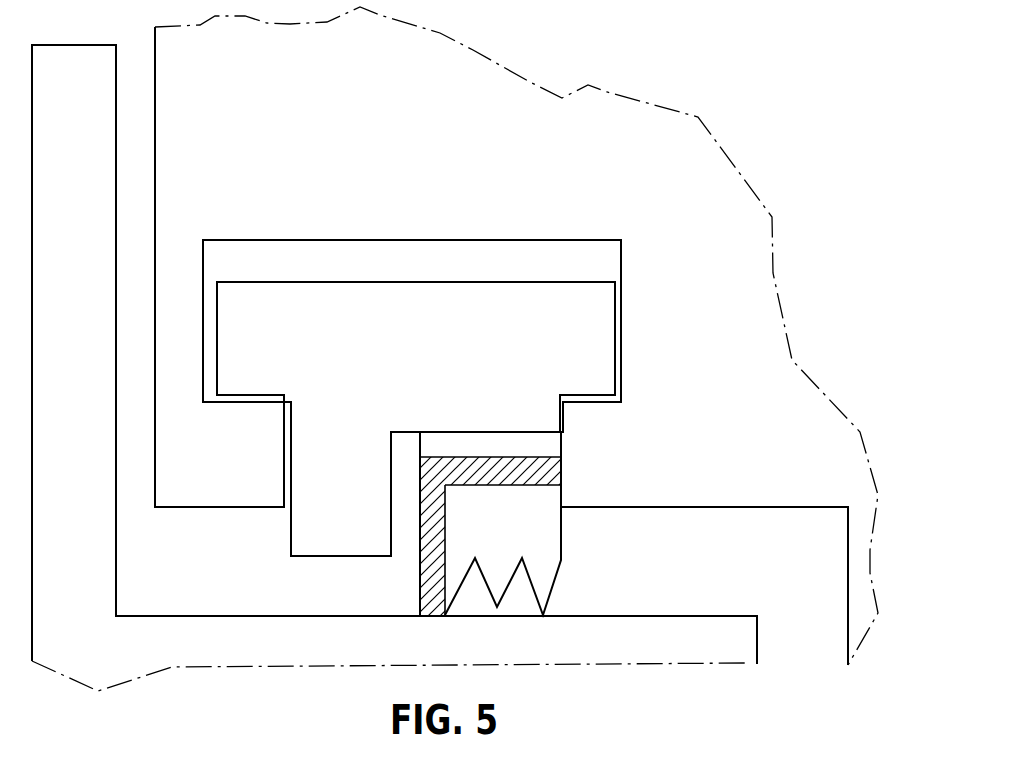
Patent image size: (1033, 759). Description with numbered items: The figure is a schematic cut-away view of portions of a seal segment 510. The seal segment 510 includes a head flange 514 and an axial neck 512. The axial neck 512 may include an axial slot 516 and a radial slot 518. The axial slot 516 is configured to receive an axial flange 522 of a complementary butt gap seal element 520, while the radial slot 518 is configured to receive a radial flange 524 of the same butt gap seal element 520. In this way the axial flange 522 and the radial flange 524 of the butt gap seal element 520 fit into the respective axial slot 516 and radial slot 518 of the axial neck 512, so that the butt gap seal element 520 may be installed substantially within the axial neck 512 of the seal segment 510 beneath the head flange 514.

The seal segment 510 is at (397, 280).
The axial neck 512 is at (485, 539).
The head flange 514 is at (388, 359).
The axial slot 516 is at (468, 432).
The radial slot 518 is at (390, 484).
The butt gap seal element 520 is at (425, 457).
The axial flange 522 is at (553, 472).
The radial flange 524 is at (432, 548).